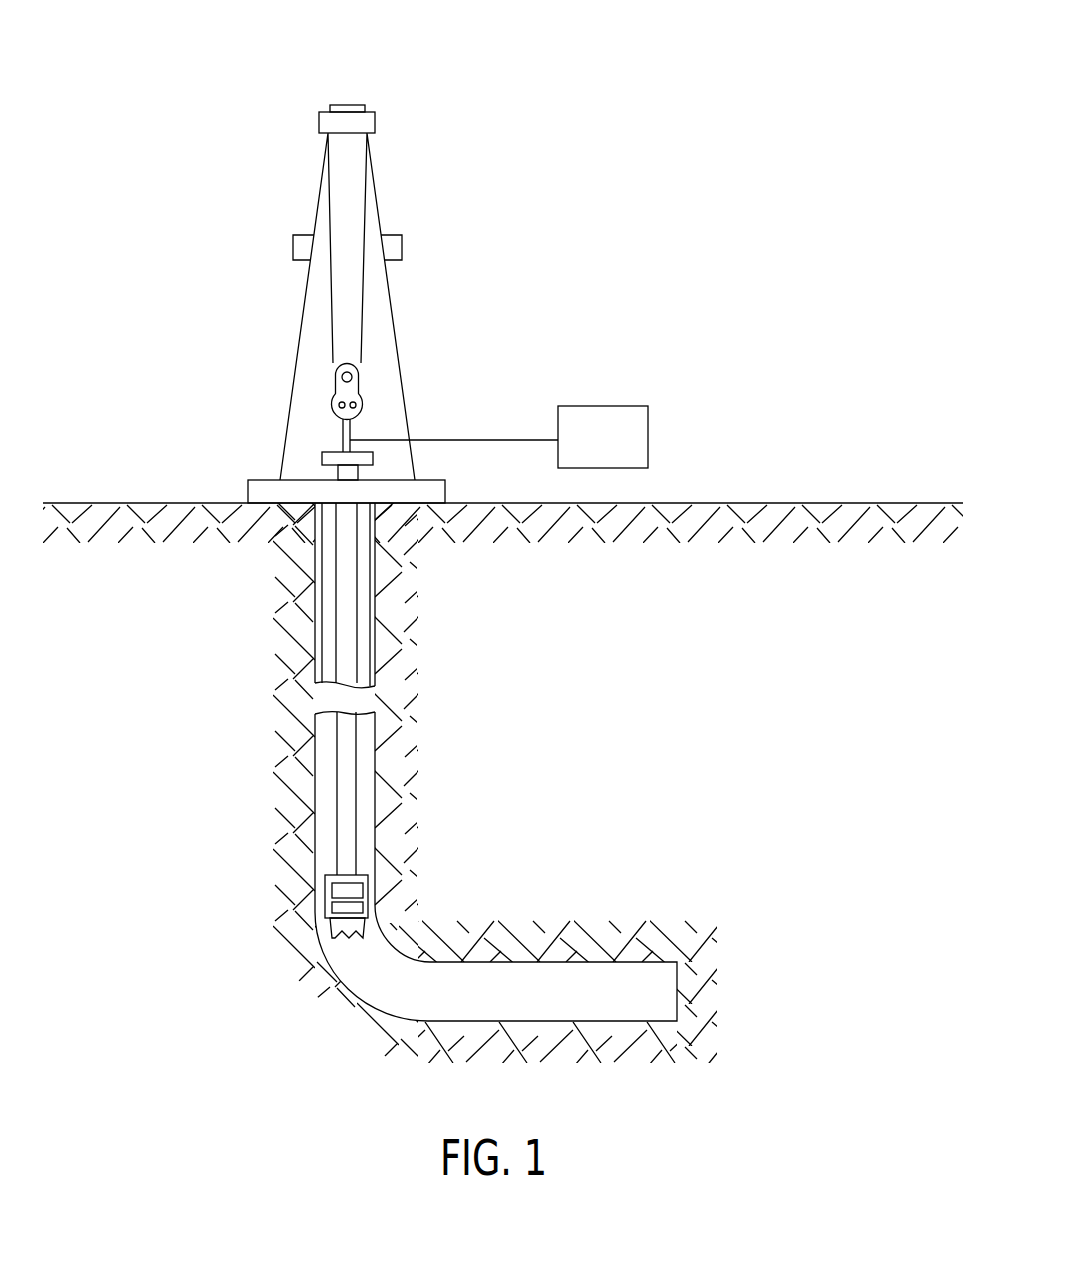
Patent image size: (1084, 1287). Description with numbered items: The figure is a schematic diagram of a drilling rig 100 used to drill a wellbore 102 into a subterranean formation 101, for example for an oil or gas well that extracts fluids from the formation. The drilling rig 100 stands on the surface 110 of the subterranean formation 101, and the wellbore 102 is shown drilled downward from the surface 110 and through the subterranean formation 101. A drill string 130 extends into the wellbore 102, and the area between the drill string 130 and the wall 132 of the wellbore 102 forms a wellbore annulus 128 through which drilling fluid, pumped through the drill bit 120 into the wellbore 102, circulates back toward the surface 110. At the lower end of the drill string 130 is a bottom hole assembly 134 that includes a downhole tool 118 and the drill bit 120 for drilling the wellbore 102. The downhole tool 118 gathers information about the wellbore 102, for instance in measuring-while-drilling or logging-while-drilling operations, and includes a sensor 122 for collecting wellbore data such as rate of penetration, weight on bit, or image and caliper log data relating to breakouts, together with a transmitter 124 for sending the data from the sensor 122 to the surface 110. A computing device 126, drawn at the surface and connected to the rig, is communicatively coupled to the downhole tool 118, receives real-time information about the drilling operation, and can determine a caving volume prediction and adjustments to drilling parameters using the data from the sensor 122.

The drilling rig 100 is at (230, 71).
The subterranean formation 101 is at (300, 805).
The wellbore 102 is at (402, 760).
The surface 110 is at (503, 736).
The downhole tool 118 is at (370, 884).
The drill bit 120 is at (327, 933).
The sensor 122 is at (370, 910).
The transmitter 124 is at (330, 888).
The computing device 126 is at (604, 406).
The wellbore annulus 128 is at (322, 770).
The drill string 130 is at (362, 820).
The wall 132 is at (315, 853).
The bottom hole assembly 134 is at (316, 874).